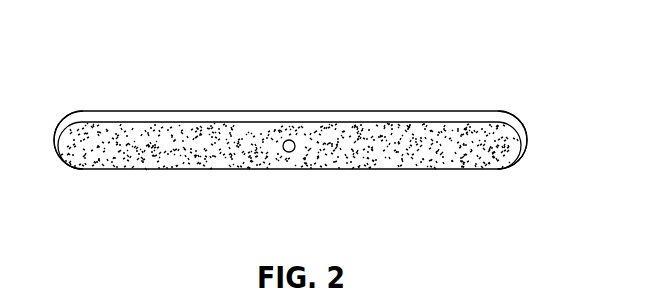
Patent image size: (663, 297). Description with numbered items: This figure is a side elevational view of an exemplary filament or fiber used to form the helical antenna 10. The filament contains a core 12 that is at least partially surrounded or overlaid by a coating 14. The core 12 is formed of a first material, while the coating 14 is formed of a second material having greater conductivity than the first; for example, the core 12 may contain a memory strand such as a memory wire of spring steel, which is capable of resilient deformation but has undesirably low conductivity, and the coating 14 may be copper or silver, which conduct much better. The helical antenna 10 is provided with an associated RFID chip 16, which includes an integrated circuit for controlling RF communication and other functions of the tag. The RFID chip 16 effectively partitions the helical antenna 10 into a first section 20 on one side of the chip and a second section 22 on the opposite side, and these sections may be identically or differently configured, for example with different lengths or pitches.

The helical antenna 10 is at (319, 124).
The core 12 is at (388, 111).
The coating 14 is at (447, 162).
The RFID chip 16 is at (290, 152).
The first section 20 is at (93, 162).
The second section 22 is at (513, 147).